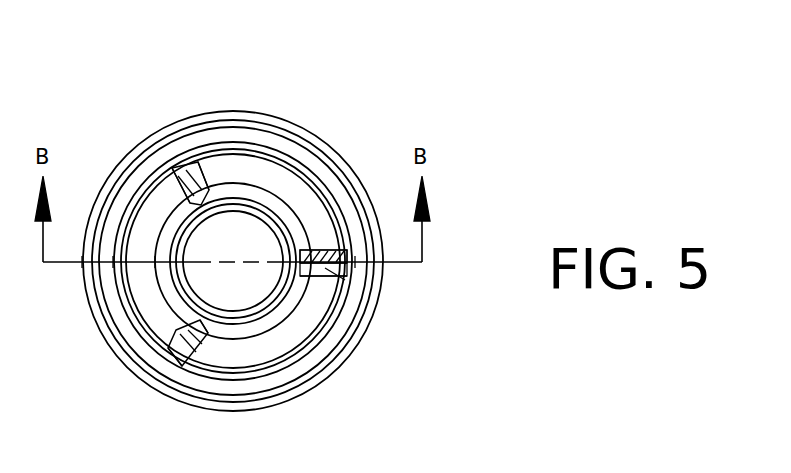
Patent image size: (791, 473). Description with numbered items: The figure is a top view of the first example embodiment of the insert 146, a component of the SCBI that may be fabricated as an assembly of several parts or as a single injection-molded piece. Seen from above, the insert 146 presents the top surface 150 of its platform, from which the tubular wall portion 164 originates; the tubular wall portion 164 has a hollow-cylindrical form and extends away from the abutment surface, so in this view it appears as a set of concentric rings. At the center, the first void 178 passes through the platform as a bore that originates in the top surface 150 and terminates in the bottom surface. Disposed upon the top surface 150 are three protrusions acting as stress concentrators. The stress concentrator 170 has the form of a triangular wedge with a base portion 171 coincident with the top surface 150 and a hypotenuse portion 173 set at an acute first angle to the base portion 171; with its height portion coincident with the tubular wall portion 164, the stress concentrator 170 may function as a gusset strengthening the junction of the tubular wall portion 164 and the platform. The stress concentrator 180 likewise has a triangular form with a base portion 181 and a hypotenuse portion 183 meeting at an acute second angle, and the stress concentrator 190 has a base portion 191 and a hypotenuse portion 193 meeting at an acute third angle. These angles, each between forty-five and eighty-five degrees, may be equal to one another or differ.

The insert 146 is at (118, 100).
The top surface 150 is at (280, 182).
The tubular wall portion 164 is at (105, 338).
The stress concentrator 170 is at (187, 173).
The base portion 171 is at (200, 172).
The hypotenuse portion 173 is at (183, 183).
The first void 178 is at (232, 228).
The stress concentrator 180 is at (180, 345).
The base portion 181 is at (172, 333).
The hypotenuse portion 183 is at (196, 328).
The stress concentrator 190 is at (327, 272).
The base portion 191 is at (318, 278).
The hypotenuse portion 193 is at (317, 245).